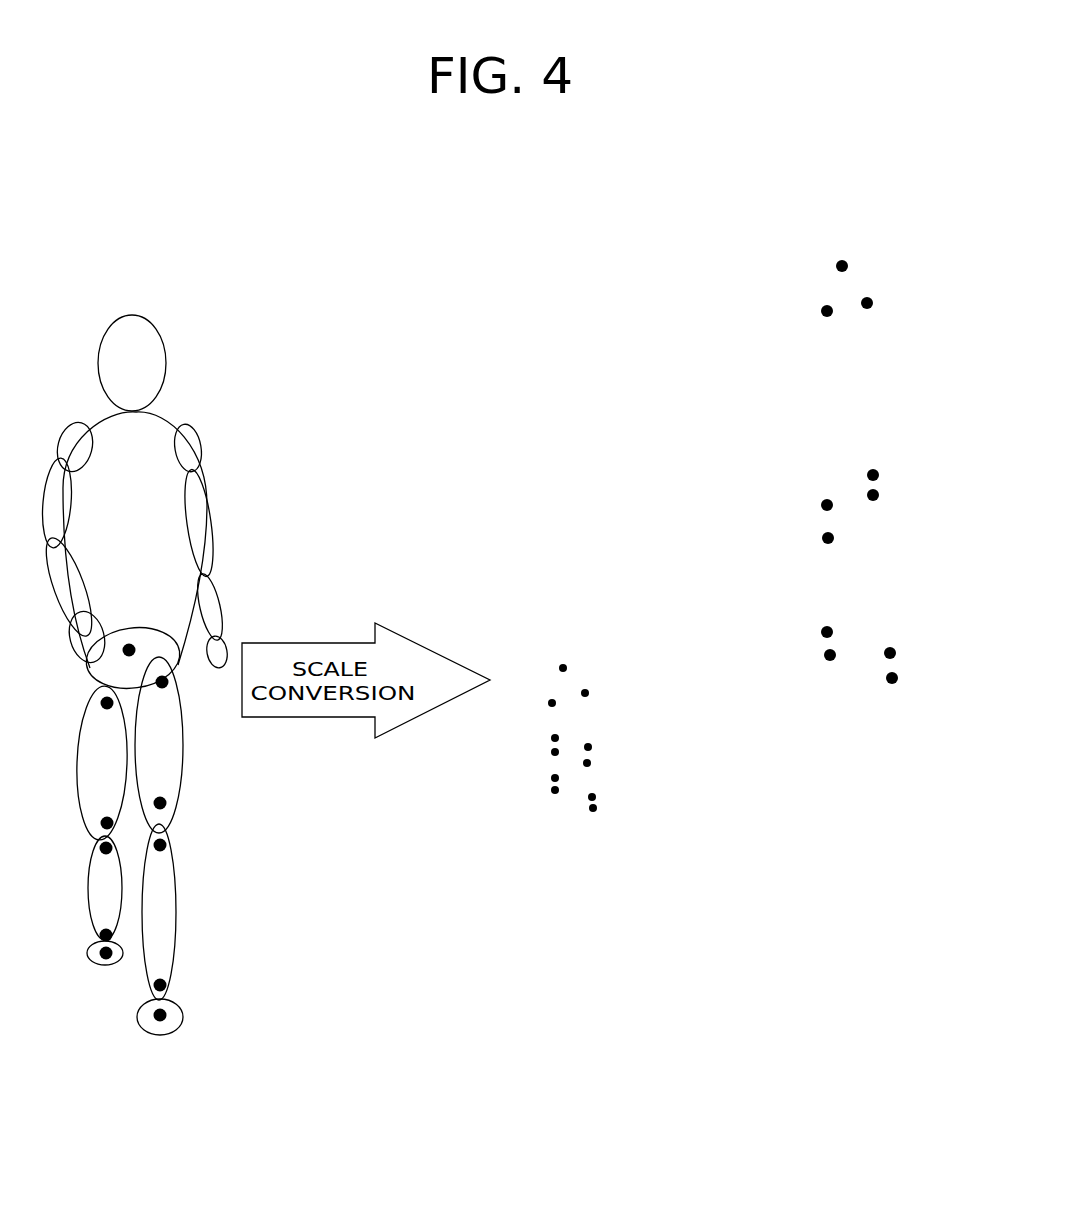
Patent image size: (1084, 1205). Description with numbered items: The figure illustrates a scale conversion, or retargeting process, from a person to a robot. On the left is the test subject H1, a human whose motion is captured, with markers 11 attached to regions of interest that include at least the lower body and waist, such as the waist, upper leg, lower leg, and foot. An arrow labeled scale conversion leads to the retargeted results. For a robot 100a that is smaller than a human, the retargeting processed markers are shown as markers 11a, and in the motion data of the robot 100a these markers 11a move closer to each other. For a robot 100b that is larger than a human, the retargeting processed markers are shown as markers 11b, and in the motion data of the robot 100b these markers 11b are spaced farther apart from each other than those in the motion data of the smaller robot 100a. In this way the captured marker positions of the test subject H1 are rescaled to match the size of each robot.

The test subject H1 is at (182, 649).
The markers 11 is at (163, 801).
The robot smaller than a human 100a is at (629, 674).
The retargeting processed markers for the smaller robot 11a is at (590, 746).
The robot larger than a human 100b is at (889, 436).
The retargeting processed markers for the larger robot 11b is at (874, 475).